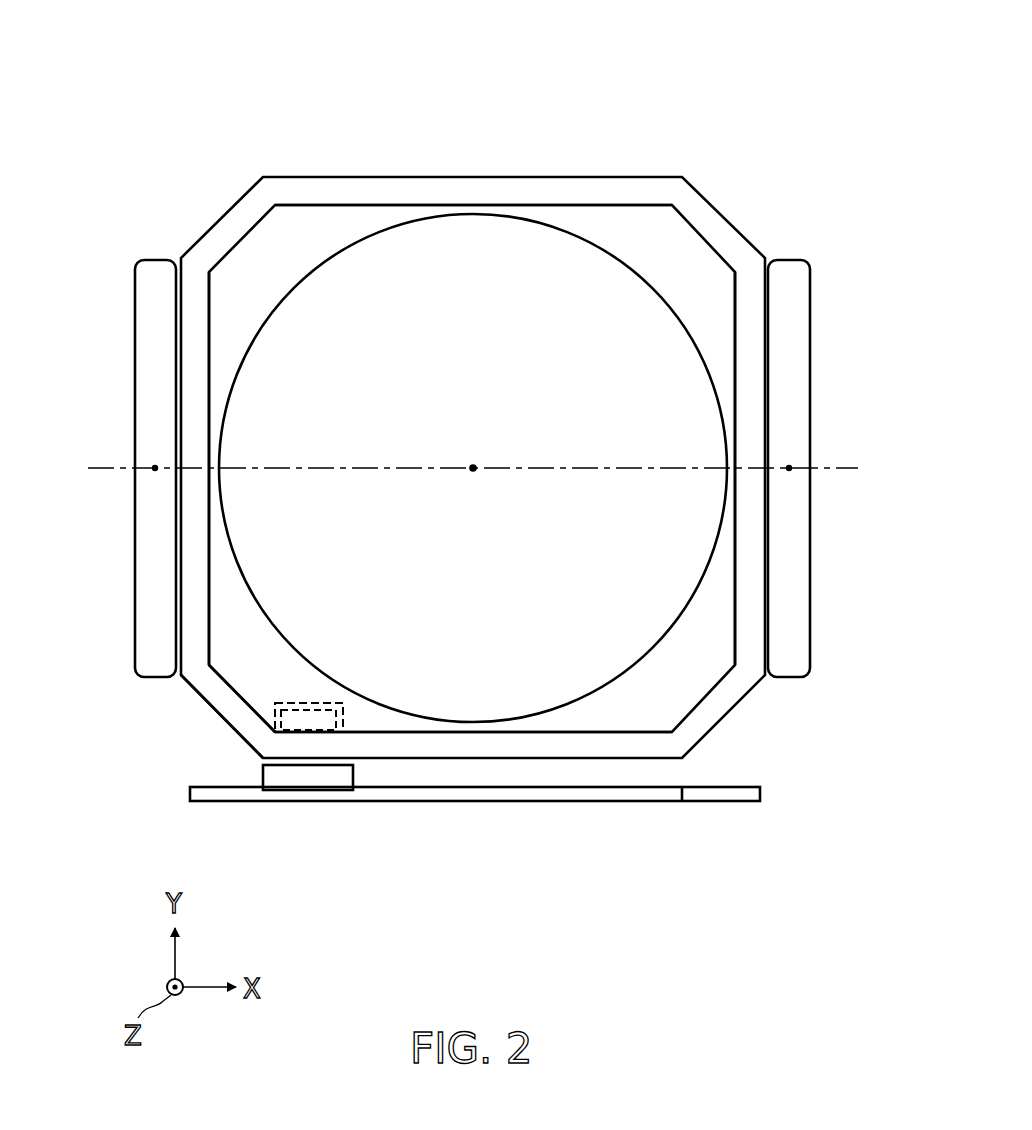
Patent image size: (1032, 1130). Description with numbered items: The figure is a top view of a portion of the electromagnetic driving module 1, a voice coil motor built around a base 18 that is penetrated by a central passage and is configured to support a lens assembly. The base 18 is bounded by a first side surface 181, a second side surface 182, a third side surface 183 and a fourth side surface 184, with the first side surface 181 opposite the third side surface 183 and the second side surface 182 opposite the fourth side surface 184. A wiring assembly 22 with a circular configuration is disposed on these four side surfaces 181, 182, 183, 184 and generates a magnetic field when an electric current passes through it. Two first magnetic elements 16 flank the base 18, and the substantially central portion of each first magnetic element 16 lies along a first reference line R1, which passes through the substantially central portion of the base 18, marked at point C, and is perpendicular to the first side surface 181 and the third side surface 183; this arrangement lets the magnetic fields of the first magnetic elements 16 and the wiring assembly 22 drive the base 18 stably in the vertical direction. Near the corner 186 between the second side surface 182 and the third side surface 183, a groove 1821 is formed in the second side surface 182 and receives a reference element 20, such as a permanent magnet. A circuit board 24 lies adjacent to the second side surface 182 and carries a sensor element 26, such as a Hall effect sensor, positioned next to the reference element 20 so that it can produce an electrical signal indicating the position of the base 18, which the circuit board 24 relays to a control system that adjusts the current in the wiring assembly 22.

The electromagnetic driving module 1 is at (776, 96).
The first magnetic elements 16 is at (158, 398).
The base 18 is at (476, 487).
The first side surface 181 is at (737, 557).
The second side surface 182 is at (473, 733).
The groove 1821 is at (275, 703).
The third side surface 183 is at (208, 573).
The fourth side surface 184 is at (475, 205).
The corner 186 is at (266, 712).
The reference element 20 is at (300, 722).
The wiring assembly 22 is at (679, 180).
The circuit board 24 is at (412, 798).
The sensor element 26 is at (310, 778).
The center point C is at (473, 468).
The first reference line R1 is at (491, 471).